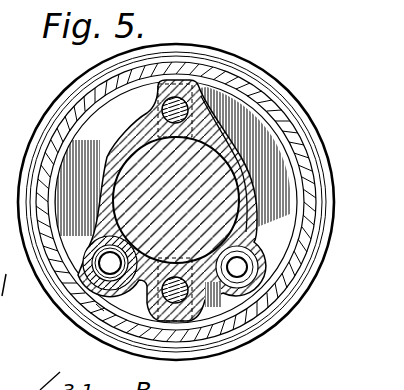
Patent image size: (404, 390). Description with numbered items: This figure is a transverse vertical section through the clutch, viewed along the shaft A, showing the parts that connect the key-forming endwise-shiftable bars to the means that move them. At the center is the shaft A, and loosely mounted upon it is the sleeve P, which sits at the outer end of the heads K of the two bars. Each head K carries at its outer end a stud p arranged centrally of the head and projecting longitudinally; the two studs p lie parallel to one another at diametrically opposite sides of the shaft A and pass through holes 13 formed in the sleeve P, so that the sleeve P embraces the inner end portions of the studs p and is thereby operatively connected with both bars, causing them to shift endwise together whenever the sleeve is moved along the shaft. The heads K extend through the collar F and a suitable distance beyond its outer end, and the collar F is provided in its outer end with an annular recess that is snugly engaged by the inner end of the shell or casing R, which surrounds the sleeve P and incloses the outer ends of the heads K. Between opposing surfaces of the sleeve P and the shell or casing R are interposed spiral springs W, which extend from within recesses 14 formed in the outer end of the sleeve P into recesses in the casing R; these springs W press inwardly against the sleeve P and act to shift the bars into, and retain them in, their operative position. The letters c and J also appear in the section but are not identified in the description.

The shaft A is at (134, 185).
The casing c is at (273, 81).
The shell or casing R is at (78, 102).
The stud p is at (197, 66).
The spiral spring W is at (108, 266).
The sleeve P is at (254, 227).
The hole 13 is at (182, 96).
The head K is at (177, 99).
The recess 14 is at (100, 270).
The collar F is at (100, 308).
The journal J is at (3, 323).